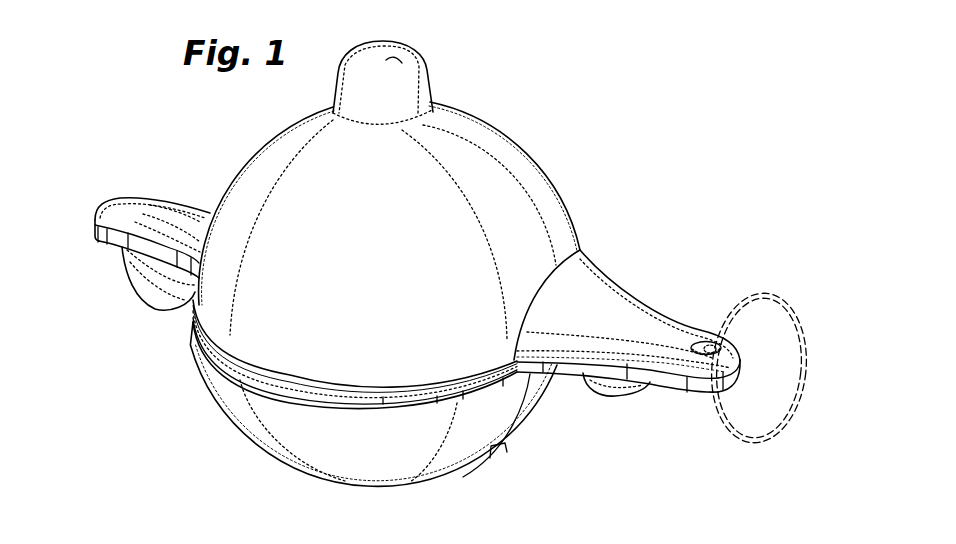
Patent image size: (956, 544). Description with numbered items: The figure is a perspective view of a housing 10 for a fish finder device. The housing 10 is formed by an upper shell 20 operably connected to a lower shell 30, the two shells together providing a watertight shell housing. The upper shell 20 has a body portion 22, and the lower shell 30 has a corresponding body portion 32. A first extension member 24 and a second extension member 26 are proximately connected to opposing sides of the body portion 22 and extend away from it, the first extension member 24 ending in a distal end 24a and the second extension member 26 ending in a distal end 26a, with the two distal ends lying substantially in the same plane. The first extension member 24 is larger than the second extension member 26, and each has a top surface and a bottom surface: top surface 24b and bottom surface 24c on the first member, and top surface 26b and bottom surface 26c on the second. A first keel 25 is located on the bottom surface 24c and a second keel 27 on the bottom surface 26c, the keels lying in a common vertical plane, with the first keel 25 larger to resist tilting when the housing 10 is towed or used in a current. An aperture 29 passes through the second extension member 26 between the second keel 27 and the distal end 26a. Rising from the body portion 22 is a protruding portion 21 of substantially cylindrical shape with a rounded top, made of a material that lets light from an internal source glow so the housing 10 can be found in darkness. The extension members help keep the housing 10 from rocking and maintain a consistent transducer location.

The housing 10 is at (518, 58).
The upper shell 20 is at (509, 160).
The protruding portion 21 is at (395, 88).
The body portion 22 is at (385, 271).
The first extension member 24 is at (170, 210).
The distal end 24a is at (103, 210).
The top surface 24b is at (183, 222).
The bottom surface 24c is at (129, 251).
The first keel 25 is at (152, 284).
The second extension member 26 is at (621, 320).
The distal end 26a is at (737, 367).
The top surface 26b is at (612, 326).
The bottom surface 26c is at (670, 395).
The second keel 27 is at (614, 382).
The aperture 29 is at (706, 344).
The lower shell 30 is at (270, 443).
The body portion 32 is at (400, 450).